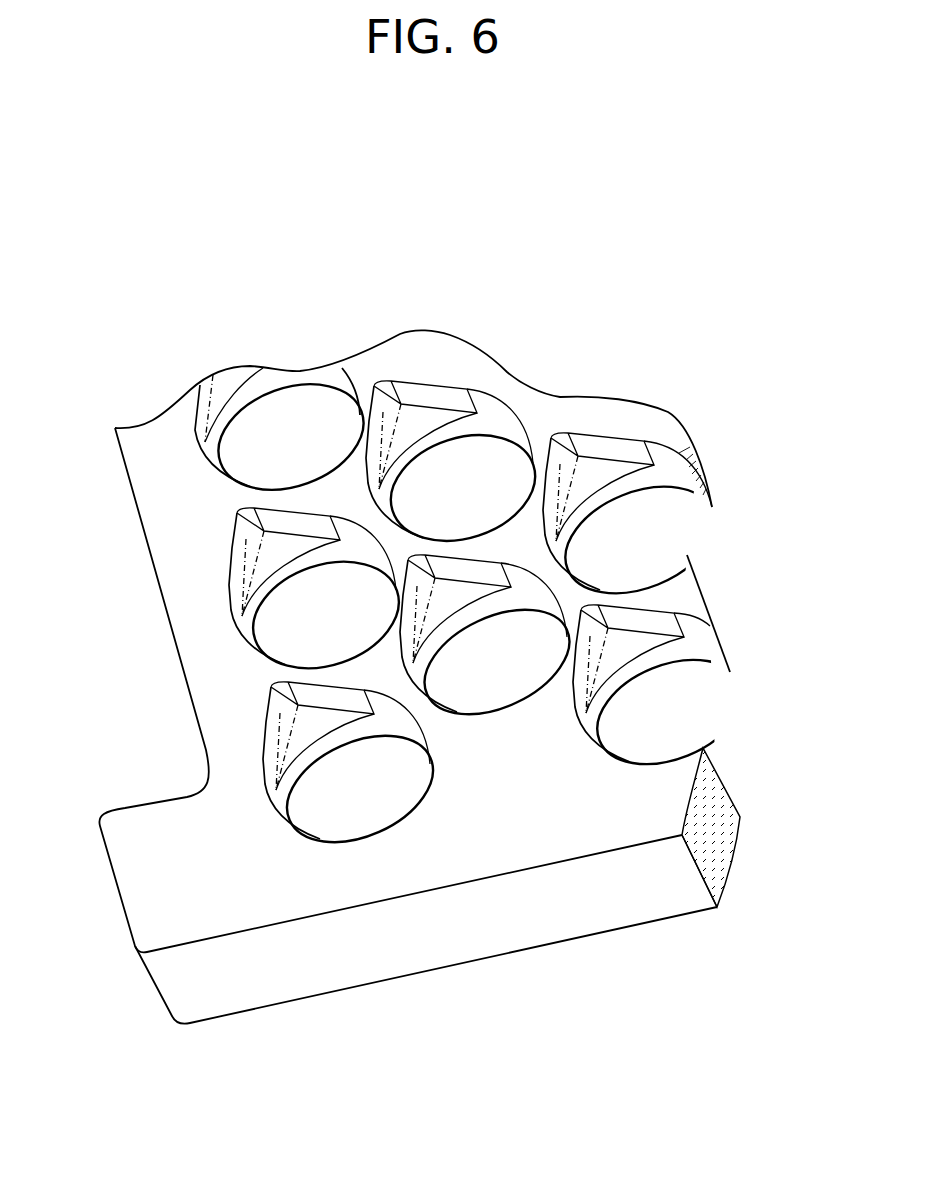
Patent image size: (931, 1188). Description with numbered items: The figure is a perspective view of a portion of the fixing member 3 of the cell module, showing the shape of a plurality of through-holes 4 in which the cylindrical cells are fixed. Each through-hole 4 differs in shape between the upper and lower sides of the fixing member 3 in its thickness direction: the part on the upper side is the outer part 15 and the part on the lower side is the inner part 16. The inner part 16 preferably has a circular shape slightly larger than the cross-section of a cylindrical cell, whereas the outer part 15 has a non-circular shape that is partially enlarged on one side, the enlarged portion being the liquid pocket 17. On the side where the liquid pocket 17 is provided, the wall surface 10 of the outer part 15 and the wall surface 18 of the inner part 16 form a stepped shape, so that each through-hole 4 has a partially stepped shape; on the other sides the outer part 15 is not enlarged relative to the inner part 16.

The fixing member 3 is at (668, 398).
The through-hole 4 is at (510, 465).
The wall surface 10 is at (437, 397).
The outer part 15 is at (460, 478).
The inner part 16 is at (387, 531).
The liquid pocket 17 is at (380, 383).
The wall surface 18 is at (508, 475).